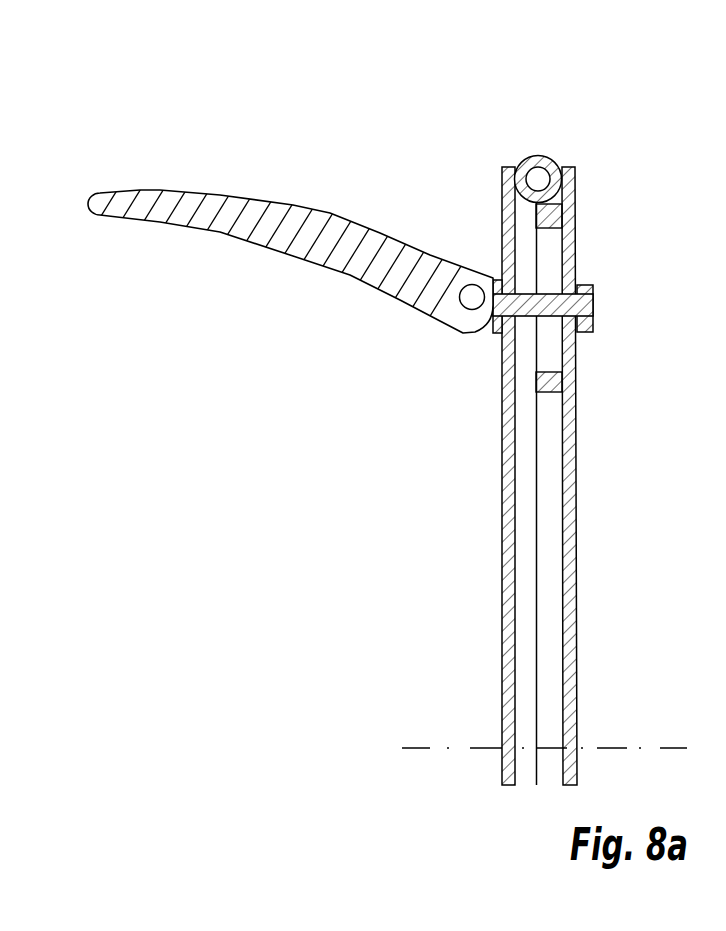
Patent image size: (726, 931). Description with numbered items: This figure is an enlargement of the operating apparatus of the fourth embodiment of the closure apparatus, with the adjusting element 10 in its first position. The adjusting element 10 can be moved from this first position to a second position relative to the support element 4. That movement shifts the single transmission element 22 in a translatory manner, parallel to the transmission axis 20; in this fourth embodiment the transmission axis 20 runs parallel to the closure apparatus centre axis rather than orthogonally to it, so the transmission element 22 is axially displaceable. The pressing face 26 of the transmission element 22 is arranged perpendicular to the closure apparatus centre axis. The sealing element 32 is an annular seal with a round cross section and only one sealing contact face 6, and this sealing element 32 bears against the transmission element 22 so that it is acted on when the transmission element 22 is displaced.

The support element 4 is at (519, 441).
The sealing contact face 6 is at (538, 155).
The adjusting element 10 is at (173, 216).
The transmission axis 20 is at (607, 748).
The transmission element 22 is at (503, 218).
The pressing face 26 is at (517, 190).
The sealing element 32 is at (540, 155).